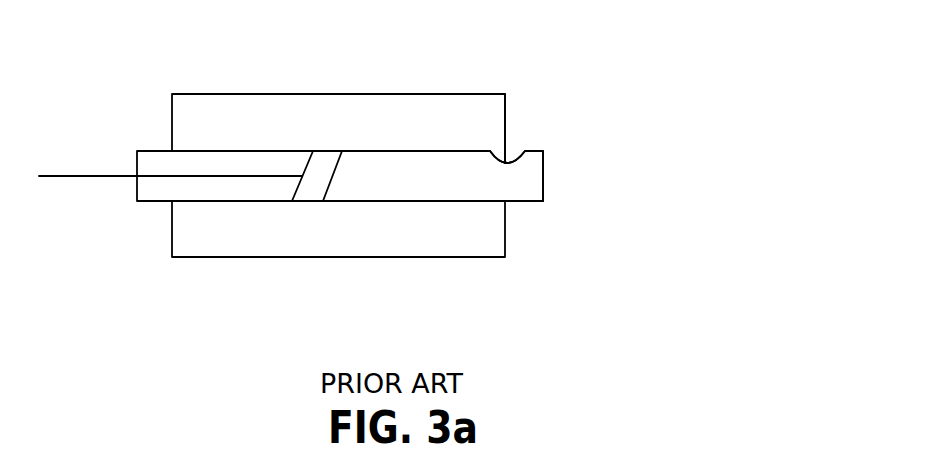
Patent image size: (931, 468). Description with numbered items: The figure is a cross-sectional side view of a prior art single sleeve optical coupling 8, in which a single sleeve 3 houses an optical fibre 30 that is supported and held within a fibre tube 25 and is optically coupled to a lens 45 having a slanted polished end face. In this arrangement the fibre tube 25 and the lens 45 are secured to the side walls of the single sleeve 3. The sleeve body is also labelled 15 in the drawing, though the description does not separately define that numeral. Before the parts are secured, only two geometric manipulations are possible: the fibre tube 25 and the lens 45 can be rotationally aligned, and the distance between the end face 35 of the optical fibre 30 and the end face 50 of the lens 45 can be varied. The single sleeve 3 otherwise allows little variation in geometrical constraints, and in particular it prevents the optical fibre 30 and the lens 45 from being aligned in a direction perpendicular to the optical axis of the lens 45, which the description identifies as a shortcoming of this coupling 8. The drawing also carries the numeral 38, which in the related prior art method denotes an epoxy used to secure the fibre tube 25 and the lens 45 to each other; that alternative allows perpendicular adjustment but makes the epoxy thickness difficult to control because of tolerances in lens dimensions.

The single sleeve coupling 8 is at (422, 68).
The connector housing 15 is at (250, 135).
The single sleeve 3 is at (497, 117).
The fibre tube 25 is at (152, 162).
The optical fibre 30 is at (115, 176).
The end face of the optical fibre 35 is at (298, 190).
The epoxy 38 is at (518, 152).
The lens 45 is at (533, 177).
The end face of the lens 50 is at (335, 177).